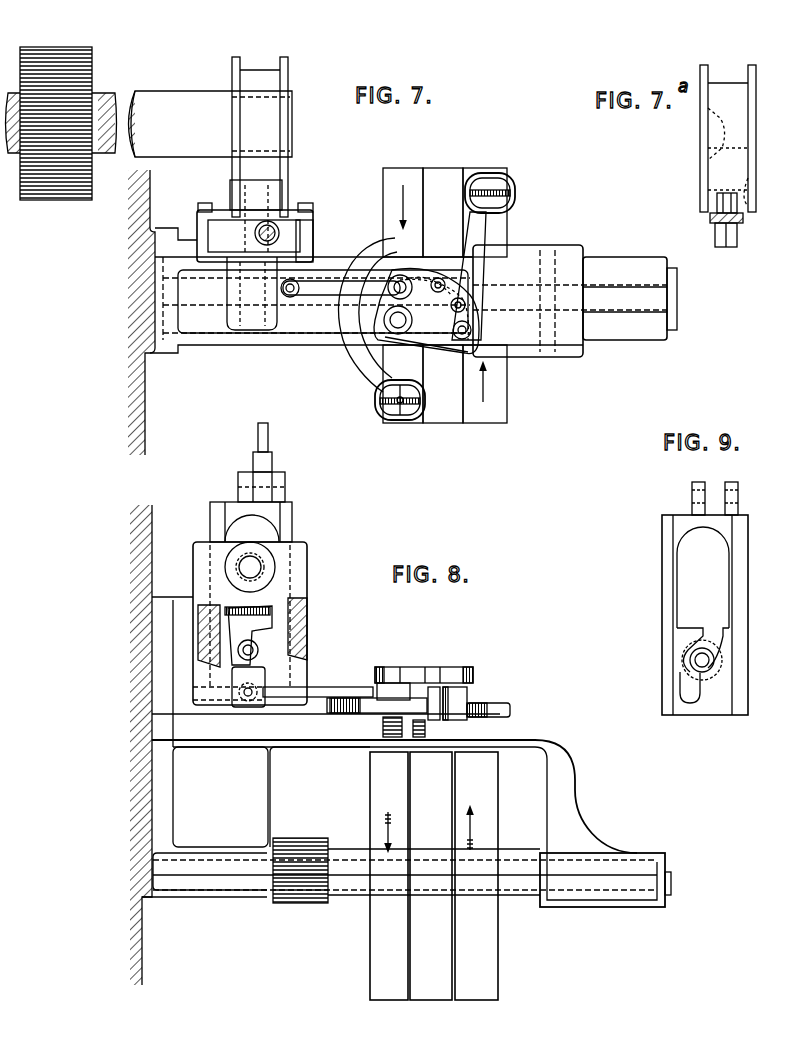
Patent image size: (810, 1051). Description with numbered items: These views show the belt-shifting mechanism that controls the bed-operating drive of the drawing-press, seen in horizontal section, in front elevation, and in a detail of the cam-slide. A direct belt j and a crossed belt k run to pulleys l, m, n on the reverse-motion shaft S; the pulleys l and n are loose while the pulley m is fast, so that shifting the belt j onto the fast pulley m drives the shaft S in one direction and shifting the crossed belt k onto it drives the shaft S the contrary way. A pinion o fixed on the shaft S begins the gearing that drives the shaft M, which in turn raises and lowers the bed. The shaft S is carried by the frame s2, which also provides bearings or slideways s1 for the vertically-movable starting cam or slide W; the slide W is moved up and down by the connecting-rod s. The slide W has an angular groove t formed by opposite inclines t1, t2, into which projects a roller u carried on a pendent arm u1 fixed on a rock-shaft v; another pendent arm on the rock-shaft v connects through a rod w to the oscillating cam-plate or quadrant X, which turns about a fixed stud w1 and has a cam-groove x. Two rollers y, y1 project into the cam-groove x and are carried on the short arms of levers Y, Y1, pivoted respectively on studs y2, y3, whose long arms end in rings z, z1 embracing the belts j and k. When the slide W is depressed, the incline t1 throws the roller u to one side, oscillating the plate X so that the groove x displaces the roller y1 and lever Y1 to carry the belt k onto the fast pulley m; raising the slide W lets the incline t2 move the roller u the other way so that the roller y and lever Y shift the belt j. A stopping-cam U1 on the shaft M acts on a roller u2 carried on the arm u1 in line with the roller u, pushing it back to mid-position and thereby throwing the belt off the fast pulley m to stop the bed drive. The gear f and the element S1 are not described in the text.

In FIG. 7, the gear wheel f is at (61, 109).
In FIG. 7, the shaft M is at (211, 124).
In FIG. 7, the stopping-cam U1 is at (257, 80).
In FIG. 7a, the stopping-cam U1 is at (735, 159).
In FIG. 7, the starting cam or slide W is at (220, 210).
In FIG. 8, the starting cam or slide W is at (296, 522).
In FIG. 9, the starting cam or slide W is at (671, 540).
In FIG. 7, the connecting-rod s is at (274, 226).
In FIG. 8, the connecting-rod s is at (270, 437).
In FIG. 7, the bearings or slideways s1 is at (312, 240).
In FIG. 7, the frame s2 is at (534, 256).
In FIG. 8, the frame s2 is at (577, 750).
In FIG. 7, the reverse-motion shaft S is at (678, 298).
In FIG. 8, the reverse-motion shaft S is at (672, 886).
In FIG. 8, the guide block S1 is at (307, 602).
In FIG. 7, the rod w is at (320, 296).
In FIG. 8, the rod w is at (363, 690).
In FIG. 7, the fixed stud w1 is at (397, 326).
In FIG. 8, the fixed stud w1 is at (390, 667).
In FIG. 7, the lever Y is at (403, 315).
In FIG. 7, the lever Y1 is at (483, 234).
In FIG. 7, the oscillating cam-plate or quadrant X is at (426, 310).
In FIG. 8, the oscillating cam-plate or quadrant X is at (416, 668).
In FIG. 7, the cam-groove x is at (470, 295).
In FIG. 7, the roller y is at (441, 282).
In FIG. 7, the roller y1 is at (466, 305).
In FIG. 7, the stud y2 is at (406, 279).
In FIG. 7, the stud y3 is at (472, 333).
In FIG. 7, the ring or fork z is at (378, 410).
In FIG. 8, the ring or fork z is at (382, 712).
In FIG. 7, the ring or fork z1 is at (492, 175).
In FIG. 8, the ring or fork z1 is at (485, 703).
In FIG. 7, the direct belt j is at (400, 420).
In FIG. 7, the loose pulley l is at (403, 285).
In FIG. 8, the loose pulley l is at (389, 876).
In FIG. 7, the fast pulley m is at (443, 286).
In FIG. 8, the fast pulley m is at (431, 876).
In FIG. 7, the crossed belt k is at (485, 201).
In FIG. 7, the loose pulley n is at (485, 397).
In FIG. 8, the loose pulley n is at (476, 876).
In FIG. 7a, the stud or roller u is at (738, 237).
In FIG. 8, the stud or roller u is at (268, 637).
In FIG. 9, the stud or roller u is at (690, 678).
In FIG. 7a, the pendent arm u1 is at (712, 218).
In FIG. 8, the pendent arm u1 is at (270, 611).
In FIG. 7a, the roller u2 is at (719, 204).
In FIG. 8, the rock-shaft v is at (250, 567).
In FIG. 8, the pinion o is at (307, 903).
In FIG. 9, the angular groove t is at (715, 637).
In FIG. 9, the incline t1 is at (680, 637).
In FIG. 9, the incline t2 is at (716, 672).